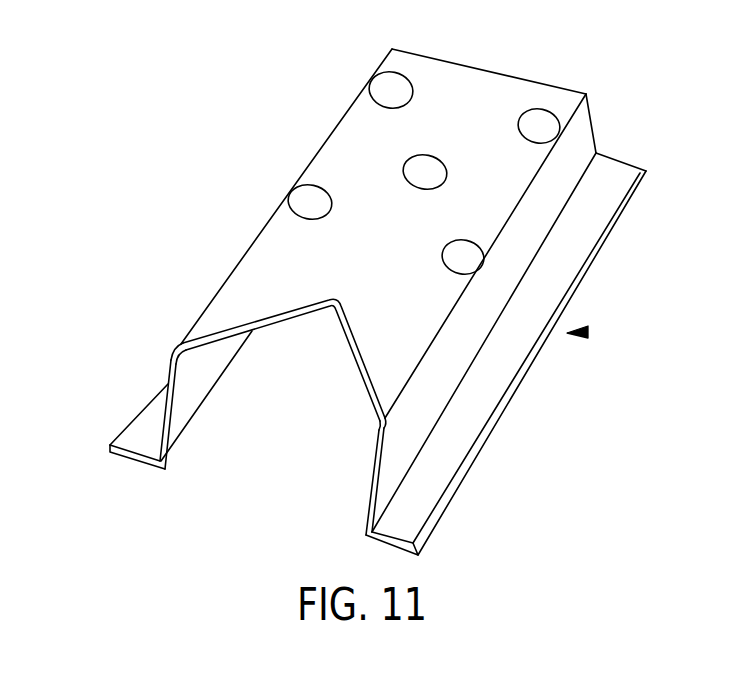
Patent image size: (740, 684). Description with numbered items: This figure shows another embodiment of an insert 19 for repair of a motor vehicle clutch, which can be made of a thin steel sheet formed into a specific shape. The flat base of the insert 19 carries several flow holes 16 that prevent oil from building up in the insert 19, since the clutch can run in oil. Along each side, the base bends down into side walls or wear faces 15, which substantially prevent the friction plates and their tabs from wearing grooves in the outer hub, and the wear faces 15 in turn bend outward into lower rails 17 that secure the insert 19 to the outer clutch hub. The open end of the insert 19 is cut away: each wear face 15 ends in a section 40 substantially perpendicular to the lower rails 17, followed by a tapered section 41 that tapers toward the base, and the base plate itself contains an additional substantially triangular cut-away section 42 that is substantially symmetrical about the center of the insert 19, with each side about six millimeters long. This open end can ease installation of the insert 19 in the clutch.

The wear face 15 is at (587, 137).
The flow hole 16 is at (546, 125).
The lower rail 17 is at (605, 190).
The insert 19 is at (588, 332).
The perpendicular section 40 is at (162, 442).
The tapered section 41 is at (173, 380).
The triangular cut-away section 42 is at (267, 330).